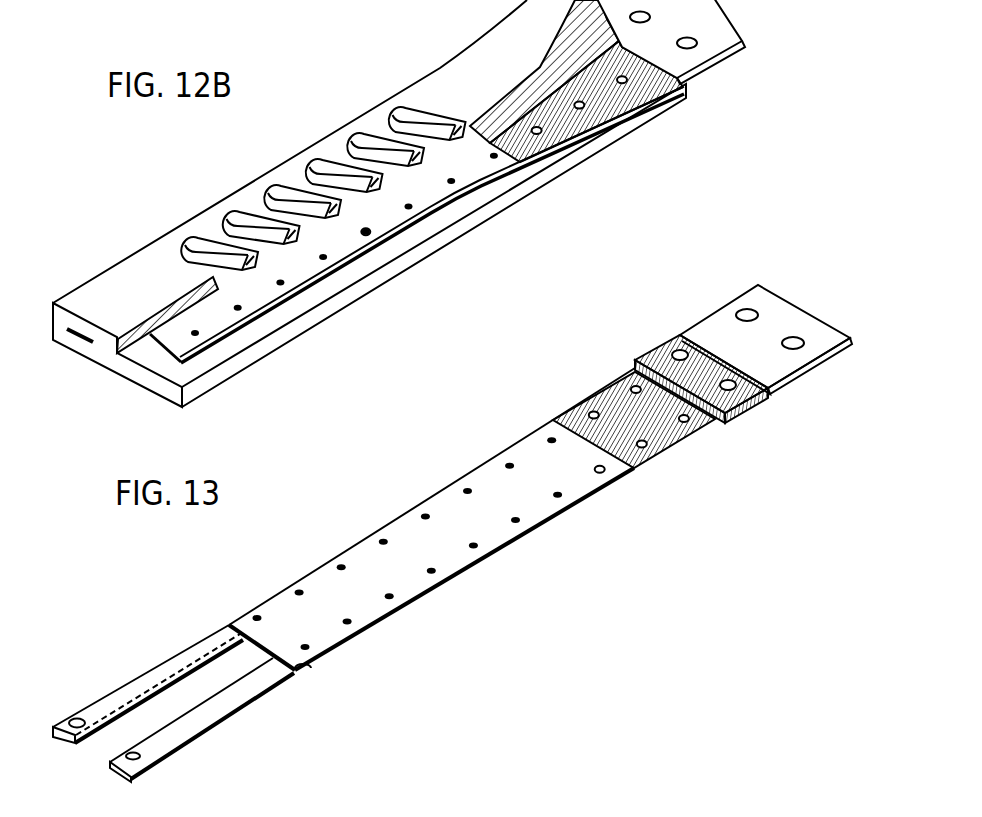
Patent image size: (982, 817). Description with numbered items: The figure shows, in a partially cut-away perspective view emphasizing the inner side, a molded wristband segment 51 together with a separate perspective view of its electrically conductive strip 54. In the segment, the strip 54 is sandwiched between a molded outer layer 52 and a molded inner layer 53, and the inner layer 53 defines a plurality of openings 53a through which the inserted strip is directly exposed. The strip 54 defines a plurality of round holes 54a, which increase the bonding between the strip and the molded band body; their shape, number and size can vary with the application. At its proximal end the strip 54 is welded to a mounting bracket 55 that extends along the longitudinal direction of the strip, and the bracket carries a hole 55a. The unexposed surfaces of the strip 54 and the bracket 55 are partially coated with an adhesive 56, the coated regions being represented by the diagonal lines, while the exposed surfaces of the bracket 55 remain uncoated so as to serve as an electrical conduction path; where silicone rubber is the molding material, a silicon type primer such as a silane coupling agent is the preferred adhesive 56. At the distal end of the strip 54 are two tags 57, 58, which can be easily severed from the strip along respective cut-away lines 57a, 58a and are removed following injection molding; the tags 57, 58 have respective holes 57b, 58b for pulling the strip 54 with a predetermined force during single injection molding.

In FIG. 12B, the wristband segment 51 is at (470, 249).
In FIG. 12B, the molded outer layer 52 is at (302, 328).
In FIG. 12B, the molded inner layer 53 is at (173, 238).
In FIG. 12B, the openings 53a is at (366, 136).
In FIG. 12B, the electrically conductive strip 54 is at (441, 194).
In FIG. 13, the electrically conductive strip 54 is at (451, 483).
In FIG. 12B, the round holes 54a is at (366, 237).
In FIG. 12B, the mounting bracket 55 is at (670, 42).
In FIG. 13, the mounting bracket 55 is at (766, 285).
In FIG. 13, the hole in terminal plate 55a is at (745, 309).
In FIG. 12B, the adhesive 56 is at (613, 100).
In FIG. 13, the adhesive 56 is at (673, 450).
In FIG. 13, the tag 57 is at (177, 657).
In FIG. 13, the cut-away line 57a is at (228, 626).
In FIG. 13, the hole 57b is at (80, 717).
In FIG. 13, the tag 58 is at (240, 704).
In FIG. 13, the cut-away line 58a is at (318, 667).
In FIG. 13, the hole 58b is at (148, 755).